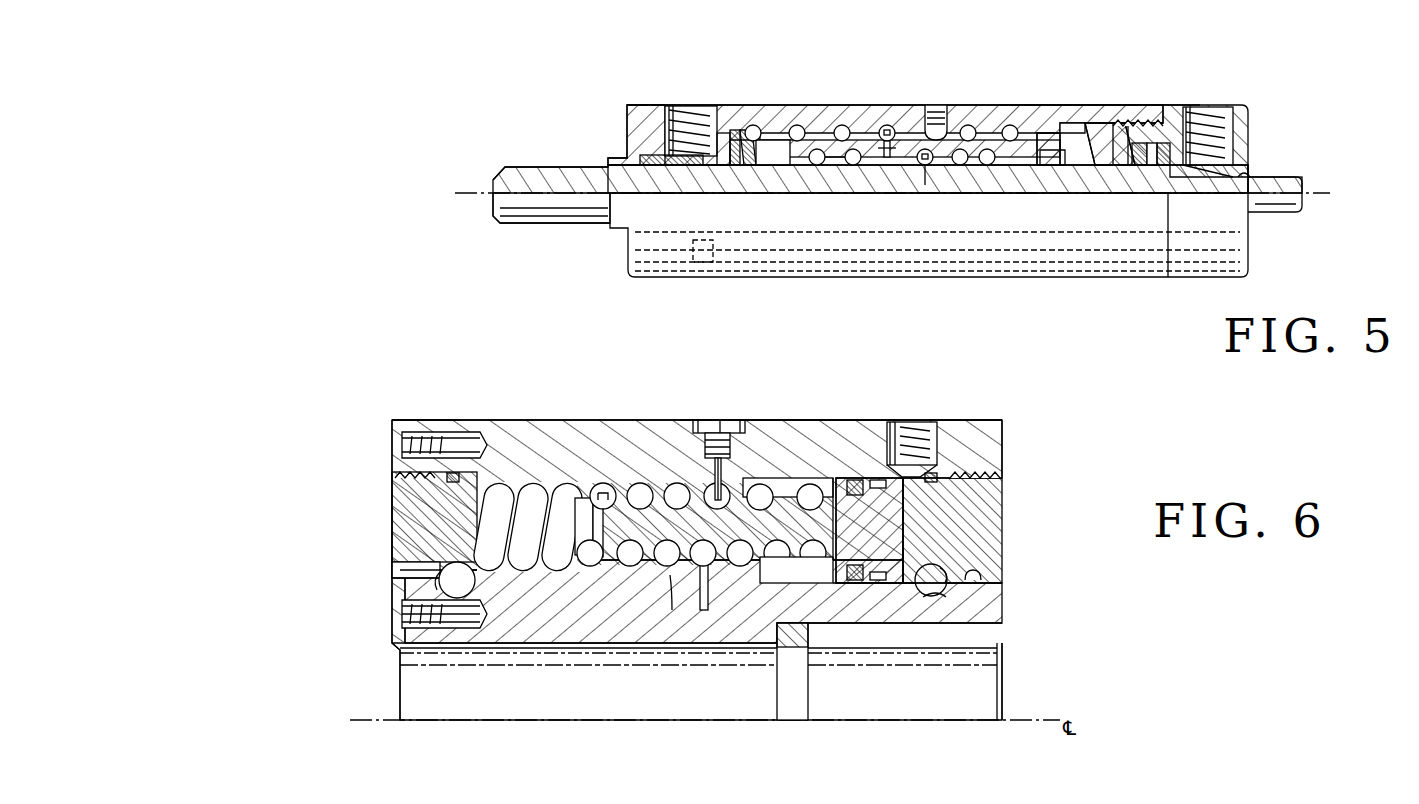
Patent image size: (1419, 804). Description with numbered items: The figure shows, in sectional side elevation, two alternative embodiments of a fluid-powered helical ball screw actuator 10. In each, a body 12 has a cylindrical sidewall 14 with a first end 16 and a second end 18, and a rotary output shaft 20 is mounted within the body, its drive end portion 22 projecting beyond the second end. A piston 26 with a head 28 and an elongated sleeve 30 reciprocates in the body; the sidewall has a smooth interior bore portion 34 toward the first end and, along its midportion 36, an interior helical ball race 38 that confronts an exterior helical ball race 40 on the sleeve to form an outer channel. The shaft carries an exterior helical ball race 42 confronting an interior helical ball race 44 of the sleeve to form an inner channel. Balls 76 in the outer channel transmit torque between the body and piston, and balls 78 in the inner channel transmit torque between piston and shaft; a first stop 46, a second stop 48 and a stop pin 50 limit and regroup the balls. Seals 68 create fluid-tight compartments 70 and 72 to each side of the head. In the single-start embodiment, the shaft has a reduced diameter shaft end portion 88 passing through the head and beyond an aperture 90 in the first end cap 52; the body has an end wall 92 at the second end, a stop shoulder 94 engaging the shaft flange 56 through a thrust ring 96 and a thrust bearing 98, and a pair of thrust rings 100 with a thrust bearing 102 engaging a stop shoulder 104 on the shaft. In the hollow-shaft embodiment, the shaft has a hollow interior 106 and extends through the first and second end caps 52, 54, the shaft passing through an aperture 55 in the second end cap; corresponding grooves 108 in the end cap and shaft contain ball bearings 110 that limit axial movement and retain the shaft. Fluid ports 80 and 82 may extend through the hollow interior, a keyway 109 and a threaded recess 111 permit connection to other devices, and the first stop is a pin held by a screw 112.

In FIG. 5, the fluid-powered helical ball screw actuator 10 is at (800, 68).
In FIG. 6, the fluid-powered helical ball screw actuator 10 is at (680, 377).
In FIG. 5, the body 12 is at (960, 108).
In FIG. 6, the body 12 is at (805, 425).
In FIG. 5, the cylindrical sidewall 14 is at (1050, 118).
In FIG. 6, the cylindrical sidewall 14 is at (785, 440).
In FIG. 5, the first end 16 is at (1165, 112).
In FIG. 6, the first end 16 is at (978, 425).
In FIG. 5, the second end 18 is at (632, 107).
In FIG. 6, the second end 18 is at (410, 425).
In FIG. 5, the rotary output shaft 20 is at (783, 172).
In FIG. 6, the rotary output shaft 20 is at (620, 617).
In FIG. 5, the drive end portion 22 is at (544, 220).
In FIG. 5, the piston 26 is at (1070, 140).
In FIG. 6, the piston 26 is at (845, 480).
In FIG. 5, the head 28 is at (1110, 140).
In FIG. 6, the head 28 is at (878, 480).
In FIG. 5, the sleeve 30 is at (995, 145).
In FIG. 6, the sleeve 30 is at (660, 487).
In FIG. 5, the smooth interior bore portion 34 is at (970, 126).
In FIG. 6, the smooth interior bore portion 34 is at (818, 480).
In FIG. 5, the midportion 36 is at (844, 126).
In FIG. 6, the midportion 36 is at (590, 487).
In FIG. 5, the interior helical ball race 38 is at (800, 128).
In FIG. 6, the interior helical ball race 38 is at (530, 487).
In FIG. 5, the exterior helical ball race 40 is at (1020, 130).
In FIG. 6, the exterior helical ball race 40 is at (755, 497).
In FIG. 5, the exterior helical ball race 42 is at (820, 162).
In FIG. 6, the exterior helical ball race 42 is at (550, 568).
In FIG. 5, the interior helical ball race 44 is at (995, 165).
In FIG. 6, the interior helical ball race 44 is at (770, 570).
In FIG. 5, the first stop 46 is at (934, 125).
In FIG. 6, the first stop 46 is at (722, 482).
In FIG. 5, the second stop 48 is at (930, 170).
In FIG. 6, the second stop 48 is at (705, 600).
In FIG. 5, the stop pin 50 is at (886, 158).
In FIG. 6, the stop pin 50 is at (598, 528).
In FIG. 5, the first end cap 52 is at (1250, 132).
In FIG. 6, the first end cap 52 is at (985, 527).
In FIG. 6, the second end cap 54 is at (410, 497).
In FIG. 6, the aperture 55 is at (420, 568).
In FIG. 5, the flange 56 is at (785, 160).
In FIG. 6, the seals 68 is at (452, 473).
In FIG. 5, the fluid-tight compartment 70 is at (1130, 140).
In FIG. 6, the fluid-tight compartment 70 is at (910, 503).
In FIG. 5, the fluid-tight compartment 72 is at (1045, 165).
In FIG. 6, the fluid-tight compartment 72 is at (820, 600).
In FIG. 5, the balls 76 is at (886, 126).
In FIG. 6, the balls 76 is at (605, 485).
In FIG. 5, the balls 78 is at (922, 166).
In FIG. 6, the balls 78 is at (672, 612).
In FIG. 5, the fluid port 80 is at (1210, 110).
In FIG. 6, the fluid port 80 is at (908, 440).
In FIG. 5, the fluid port 82 is at (690, 110).
In FIG. 6, the fluid port 82 is at (405, 450).
In FIG. 5, the reduced diameter shaft end portion 88 is at (1272, 200).
In FIG. 5, the aperture 90 is at (1252, 177).
In FIG. 6, the aperture 90 is at (970, 583).
In FIG. 5, the end wall 92 is at (648, 108).
In FIG. 5, the stop shoulder 94 is at (723, 135).
In FIG. 5, the thrust ring 96 is at (735, 130).
In FIG. 5, the thrust bearing 98 is at (750, 130).
In FIG. 5, the thrust rings 100 is at (1150, 120).
In FIG. 5, the thrust bearing 102 is at (1163, 166).
In FIG. 5, the stop shoulder 104 is at (1140, 166).
In FIG. 6, the hollow interior 106 is at (418, 686).
In FIG. 6, the grooves 108 is at (490, 590).
In FIG. 6, the keyway 109 is at (970, 627).
In FIG. 6, the ball bearings 110 is at (405, 612).
In FIG. 6, the threaded recess 111 is at (408, 618).
In FIG. 6, the screw 112 is at (715, 433).